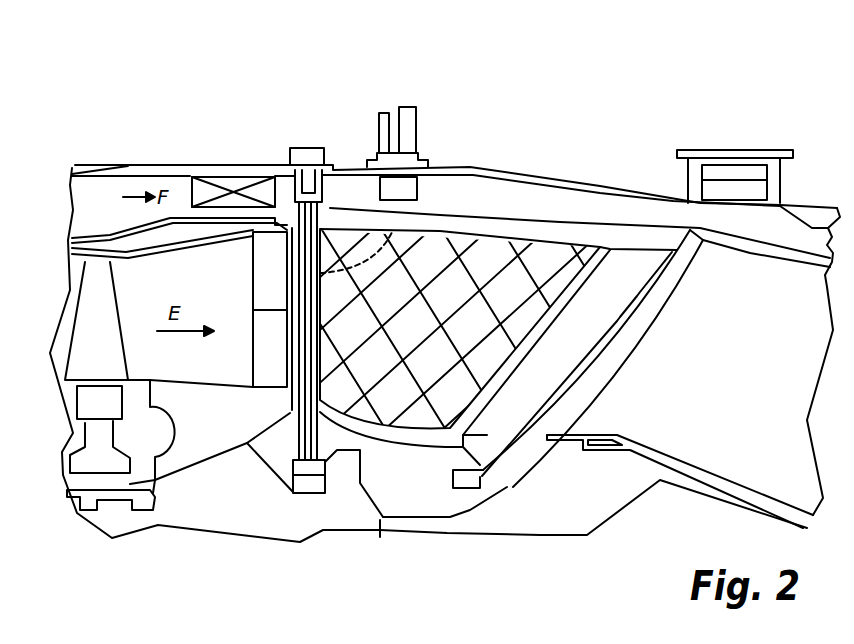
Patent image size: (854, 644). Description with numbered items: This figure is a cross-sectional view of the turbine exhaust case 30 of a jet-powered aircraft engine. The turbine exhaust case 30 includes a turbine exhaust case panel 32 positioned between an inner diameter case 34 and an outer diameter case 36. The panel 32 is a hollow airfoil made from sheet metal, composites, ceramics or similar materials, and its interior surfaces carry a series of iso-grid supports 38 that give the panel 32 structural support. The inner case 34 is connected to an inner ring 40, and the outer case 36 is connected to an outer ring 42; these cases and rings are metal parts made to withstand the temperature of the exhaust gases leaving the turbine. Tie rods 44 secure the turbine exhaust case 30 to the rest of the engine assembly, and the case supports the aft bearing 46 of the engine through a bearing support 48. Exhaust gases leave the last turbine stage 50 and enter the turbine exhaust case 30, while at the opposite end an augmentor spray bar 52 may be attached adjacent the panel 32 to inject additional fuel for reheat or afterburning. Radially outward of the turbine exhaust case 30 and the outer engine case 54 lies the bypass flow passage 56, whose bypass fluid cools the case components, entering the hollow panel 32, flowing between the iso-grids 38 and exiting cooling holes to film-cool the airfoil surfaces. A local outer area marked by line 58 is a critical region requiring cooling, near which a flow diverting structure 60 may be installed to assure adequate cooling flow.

The turbine exhaust case 30 is at (477, 118).
The turbine exhaust case panel 32 is at (540, 267).
The inner diameter case 34 is at (432, 437).
The outer diameter case 36 is at (382, 247).
The iso-grid supports 38 is at (473, 277).
The inner ring 40 is at (490, 443).
The outer ring 42 is at (647, 237).
The tie rods 44 is at (292, 212).
The aft bearing 46 is at (87, 502).
The bearing support 48 is at (198, 447).
The last turbine stage 50 is at (100, 318).
The augmentor spray bar 52 is at (557, 420).
The outer engine case 54 is at (443, 163).
The bypass flow passage 56 is at (82, 202).
The line depicting local outer area 58 is at (338, 225).
The seal 60 is at (188, 165).